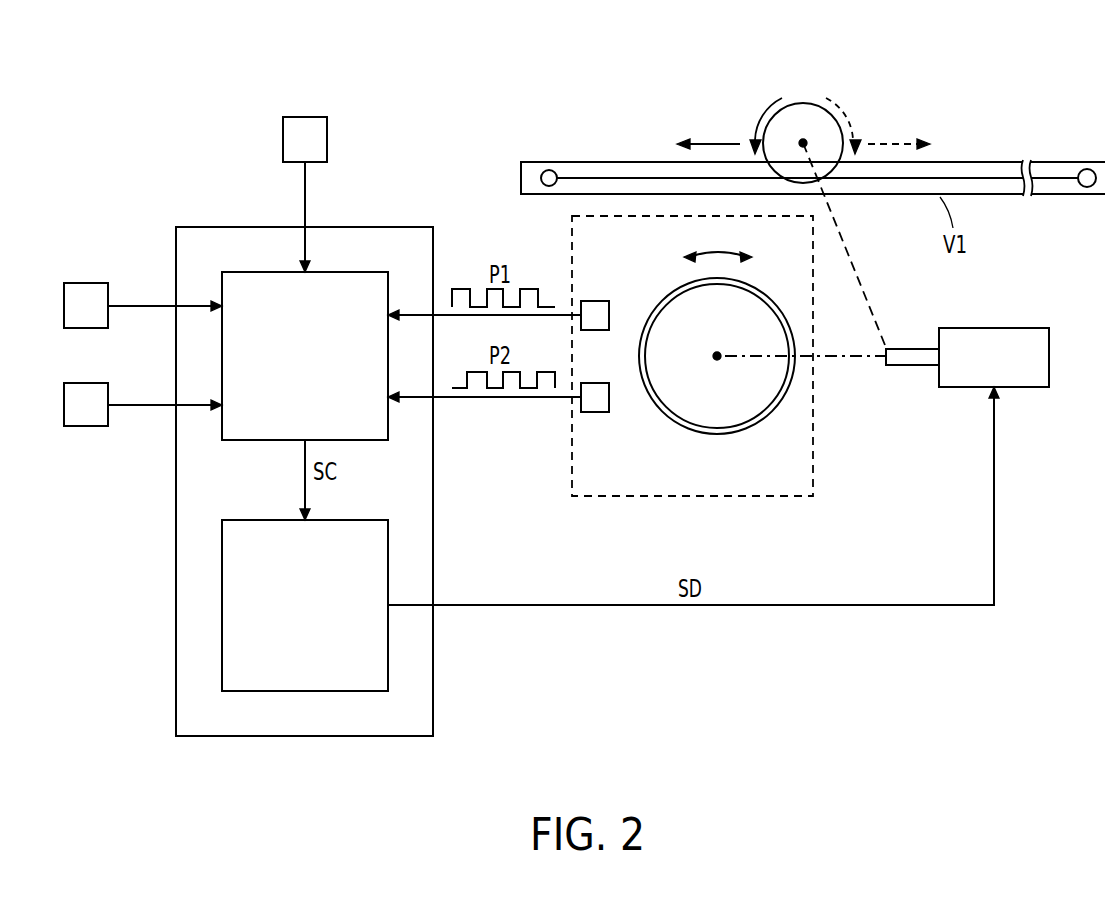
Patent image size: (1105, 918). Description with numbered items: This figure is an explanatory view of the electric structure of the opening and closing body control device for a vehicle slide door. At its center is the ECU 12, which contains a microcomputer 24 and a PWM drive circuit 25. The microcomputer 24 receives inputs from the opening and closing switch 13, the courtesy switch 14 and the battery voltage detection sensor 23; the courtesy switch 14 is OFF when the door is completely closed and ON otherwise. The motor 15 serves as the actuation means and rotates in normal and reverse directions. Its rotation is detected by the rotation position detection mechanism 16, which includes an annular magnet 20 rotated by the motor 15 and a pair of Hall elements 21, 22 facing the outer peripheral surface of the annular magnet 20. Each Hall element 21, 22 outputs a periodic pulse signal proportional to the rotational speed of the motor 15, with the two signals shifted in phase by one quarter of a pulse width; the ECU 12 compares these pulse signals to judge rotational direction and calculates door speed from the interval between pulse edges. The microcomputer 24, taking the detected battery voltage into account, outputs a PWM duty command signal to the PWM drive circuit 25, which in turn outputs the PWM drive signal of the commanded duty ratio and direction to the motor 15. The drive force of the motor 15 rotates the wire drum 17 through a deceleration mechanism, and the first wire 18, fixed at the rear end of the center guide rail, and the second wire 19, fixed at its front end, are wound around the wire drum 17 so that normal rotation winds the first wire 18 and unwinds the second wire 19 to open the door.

The ECU 12 is at (377, 227).
The opening and closing switch 13 is at (88, 283).
The courtesy switch 14 is at (83, 427).
The motor 15 is at (993, 328).
The rotation position detection mechanism 16 is at (813, 453).
The wire drum 17 is at (805, 104).
The first wire 18 is at (1048, 178).
The second wire 19 is at (613, 178).
The annular magnet 20 is at (677, 425).
The Hall element 21 is at (593, 301).
The Hall element 22 is at (595, 412).
The battery voltage detection sensor 23 is at (283, 141).
The microcomputer 24 is at (388, 287).
The PWM drive circuit 25 is at (388, 533).